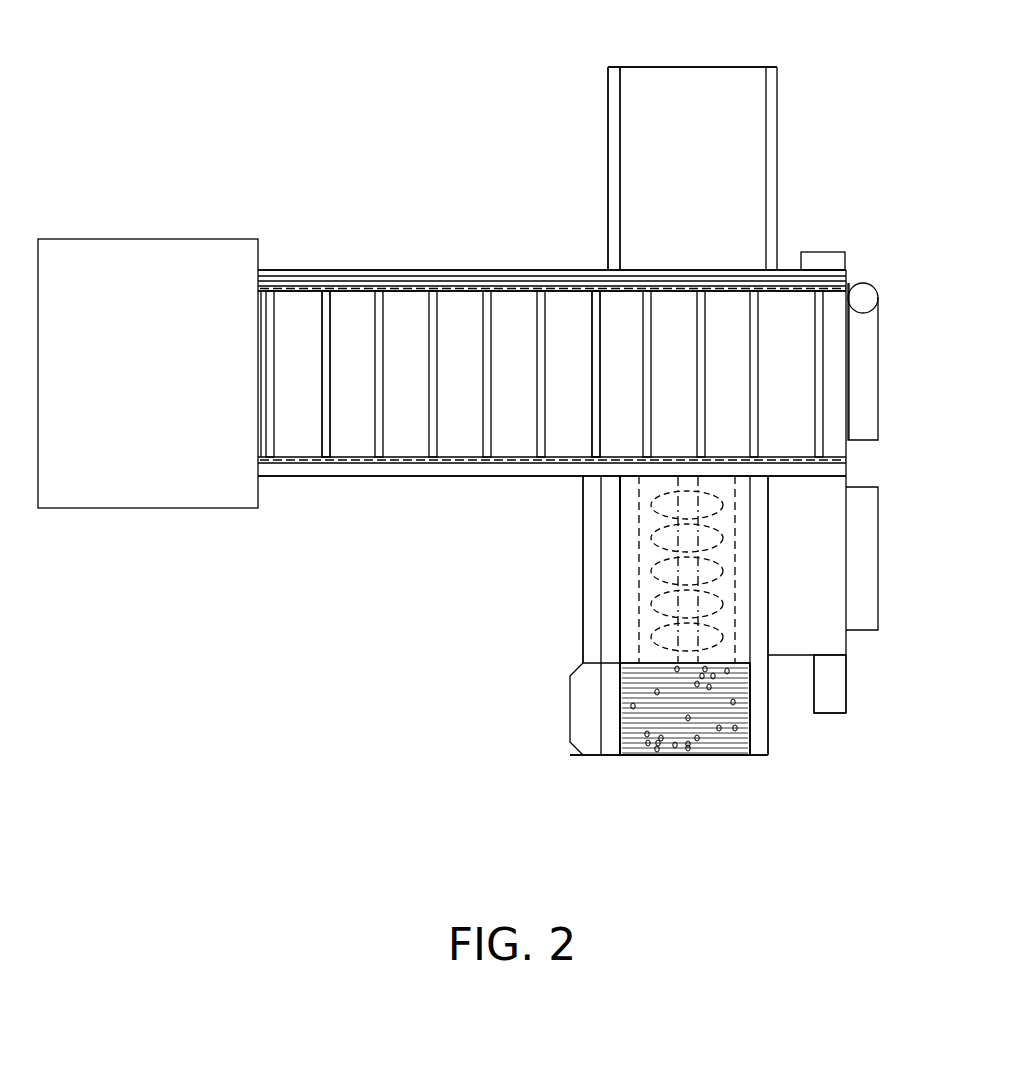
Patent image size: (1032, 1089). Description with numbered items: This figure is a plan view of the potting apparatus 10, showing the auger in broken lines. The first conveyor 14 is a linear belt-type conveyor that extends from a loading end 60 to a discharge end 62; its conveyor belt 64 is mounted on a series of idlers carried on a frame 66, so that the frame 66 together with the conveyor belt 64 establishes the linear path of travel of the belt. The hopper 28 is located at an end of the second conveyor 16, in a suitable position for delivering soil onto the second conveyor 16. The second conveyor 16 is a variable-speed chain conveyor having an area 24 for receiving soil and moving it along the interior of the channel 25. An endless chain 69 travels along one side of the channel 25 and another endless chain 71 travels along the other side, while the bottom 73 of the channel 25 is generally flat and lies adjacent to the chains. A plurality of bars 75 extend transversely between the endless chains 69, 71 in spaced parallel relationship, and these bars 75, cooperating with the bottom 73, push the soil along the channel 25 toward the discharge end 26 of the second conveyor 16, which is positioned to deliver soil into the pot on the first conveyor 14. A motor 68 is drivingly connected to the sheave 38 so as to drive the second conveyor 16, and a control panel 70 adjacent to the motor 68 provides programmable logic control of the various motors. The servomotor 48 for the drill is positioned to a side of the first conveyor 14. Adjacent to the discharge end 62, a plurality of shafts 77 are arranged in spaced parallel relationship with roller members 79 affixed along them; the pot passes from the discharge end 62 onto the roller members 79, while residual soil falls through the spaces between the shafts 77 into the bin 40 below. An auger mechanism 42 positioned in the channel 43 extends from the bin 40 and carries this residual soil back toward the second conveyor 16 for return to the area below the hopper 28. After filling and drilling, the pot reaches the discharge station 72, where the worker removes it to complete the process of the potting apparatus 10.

The potting apparatus 10 is at (450, 188).
The first conveyor 14 is at (752, 152).
The second conveyor 16 is at (408, 430).
The area 24 is at (412, 283).
The channel 25 is at (452, 283).
The end 26 is at (850, 360).
The hopper 28 is at (162, 258).
The sheave 38 is at (850, 281).
The bin 40 is at (582, 727).
The auger mechanism 42 is at (660, 572).
The channel 43 is at (640, 540).
The servomotor 48 is at (833, 685).
The loading end 60 is at (735, 68).
The discharge end 62 is at (583, 662).
The conveyor belt 64 is at (665, 76).
The frame 66 is at (614, 130).
The motor 68 is at (823, 258).
The endless chain 69 is at (510, 290).
The control panel 70 is at (870, 410).
The endless chain 71 is at (515, 465).
The discharge station 72 is at (617, 705).
The bottom 73 is at (352, 296).
The bars 75 is at (331, 375).
The shafts 77 is at (750, 720).
The roller members 79 is at (693, 742).